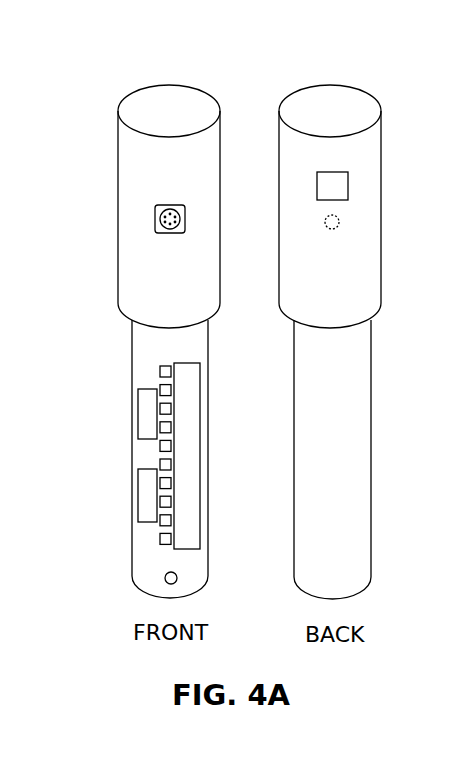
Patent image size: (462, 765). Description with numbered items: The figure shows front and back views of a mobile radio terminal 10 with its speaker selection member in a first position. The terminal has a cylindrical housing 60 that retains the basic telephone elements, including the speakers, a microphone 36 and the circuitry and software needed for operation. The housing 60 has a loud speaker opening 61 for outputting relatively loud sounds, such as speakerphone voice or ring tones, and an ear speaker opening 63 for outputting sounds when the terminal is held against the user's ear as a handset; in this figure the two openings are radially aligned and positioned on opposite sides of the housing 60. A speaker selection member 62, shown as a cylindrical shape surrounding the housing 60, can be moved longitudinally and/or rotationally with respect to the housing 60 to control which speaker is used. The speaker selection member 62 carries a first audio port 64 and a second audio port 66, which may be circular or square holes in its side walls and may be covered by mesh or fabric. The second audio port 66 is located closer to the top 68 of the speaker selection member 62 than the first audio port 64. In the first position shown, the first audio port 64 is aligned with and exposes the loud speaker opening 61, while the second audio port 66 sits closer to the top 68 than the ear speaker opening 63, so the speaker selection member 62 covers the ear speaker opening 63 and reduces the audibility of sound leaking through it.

The mobile radio terminal 10 is at (109, 68).
The top of the speaker selection member 68 is at (313, 97).
The speaker selection member 62 is at (307, 167).
The cylindrical housing 60 is at (310, 565).
The loud speaker opening 61 is at (155, 208).
The first audio port 64 is at (155, 225).
The second audio port 66 is at (348, 183).
The ear speaker opening 63 is at (338, 219).
The microphone 36 is at (166, 574).